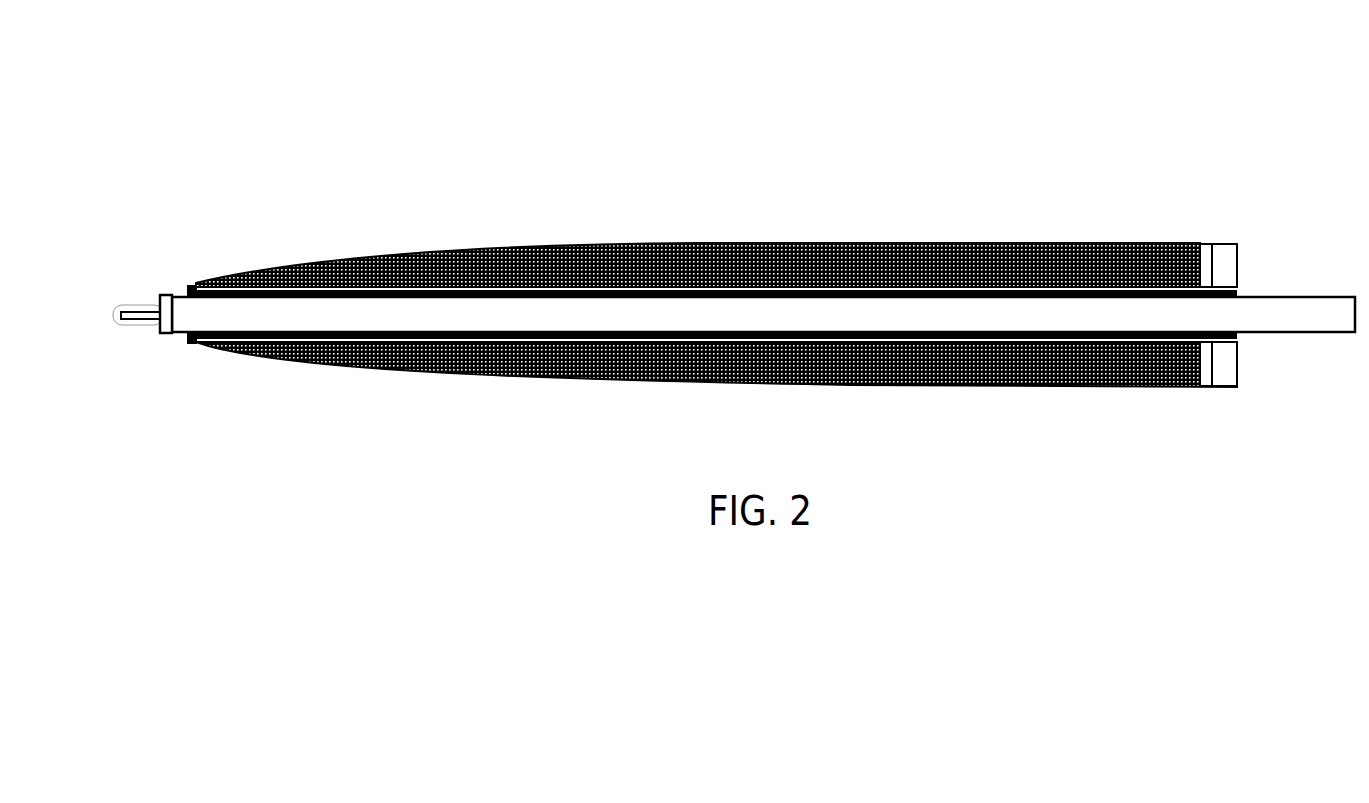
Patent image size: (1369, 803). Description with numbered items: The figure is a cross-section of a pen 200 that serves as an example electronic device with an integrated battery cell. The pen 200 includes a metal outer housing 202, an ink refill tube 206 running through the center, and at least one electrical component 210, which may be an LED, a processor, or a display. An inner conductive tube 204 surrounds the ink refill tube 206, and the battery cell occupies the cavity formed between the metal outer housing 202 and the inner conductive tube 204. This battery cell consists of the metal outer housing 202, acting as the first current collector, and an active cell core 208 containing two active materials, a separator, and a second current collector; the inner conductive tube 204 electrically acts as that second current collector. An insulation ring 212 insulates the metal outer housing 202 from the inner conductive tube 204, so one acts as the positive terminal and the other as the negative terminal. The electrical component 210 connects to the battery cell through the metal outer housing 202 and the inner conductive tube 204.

The pen 200 is at (465, 99).
The metal outer housing 202 is at (687, 245).
The inner conductive tube 204 is at (957, 280).
The ink refill tube 206 is at (1277, 297).
The active cell core 208 is at (817, 257).
The electrical component 210 is at (1222, 243).
The insulation ring 212 is at (190, 287).